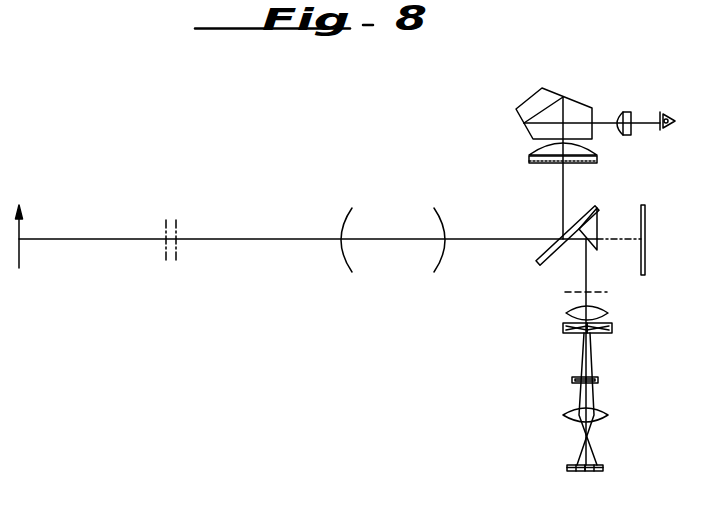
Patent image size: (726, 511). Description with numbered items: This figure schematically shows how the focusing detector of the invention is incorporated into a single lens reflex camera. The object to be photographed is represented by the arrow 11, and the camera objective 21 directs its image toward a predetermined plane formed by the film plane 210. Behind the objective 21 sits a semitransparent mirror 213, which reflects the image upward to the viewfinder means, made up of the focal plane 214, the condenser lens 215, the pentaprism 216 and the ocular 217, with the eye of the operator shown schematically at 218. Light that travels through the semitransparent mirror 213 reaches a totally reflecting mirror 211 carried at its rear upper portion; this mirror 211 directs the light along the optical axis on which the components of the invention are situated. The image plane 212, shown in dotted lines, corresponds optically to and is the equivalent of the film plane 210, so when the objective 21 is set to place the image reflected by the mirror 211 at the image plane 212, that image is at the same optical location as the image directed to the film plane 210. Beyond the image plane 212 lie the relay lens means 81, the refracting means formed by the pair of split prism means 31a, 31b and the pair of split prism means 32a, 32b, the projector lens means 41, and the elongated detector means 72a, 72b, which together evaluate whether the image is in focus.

The arrow 11 is at (21, 258).
The objective 21 is at (385, 268).
The pentaprism 216 is at (557, 87).
The ocular 217 is at (628, 110).
The eye of the operator 218 is at (671, 129).
The condenser lens 215 is at (595, 150).
The focal plane 214 is at (597, 162).
The film plane 210 is at (645, 220).
The semitransparent mirror 213 is at (540, 261).
The totally reflecting mirror 211 is at (598, 247).
The image plane 212 is at (565, 292).
The relay lens means 81 is at (609, 312).
The split prism means 31a is at (612, 332).
The split prism means 31b is at (562, 330).
The split prism means 32a is at (598, 381).
The split prism means 32b is at (572, 381).
The projector lens means 41 is at (609, 416).
The elongated detector means 72a is at (567, 468).
The elongated detector means 72b is at (603, 468).